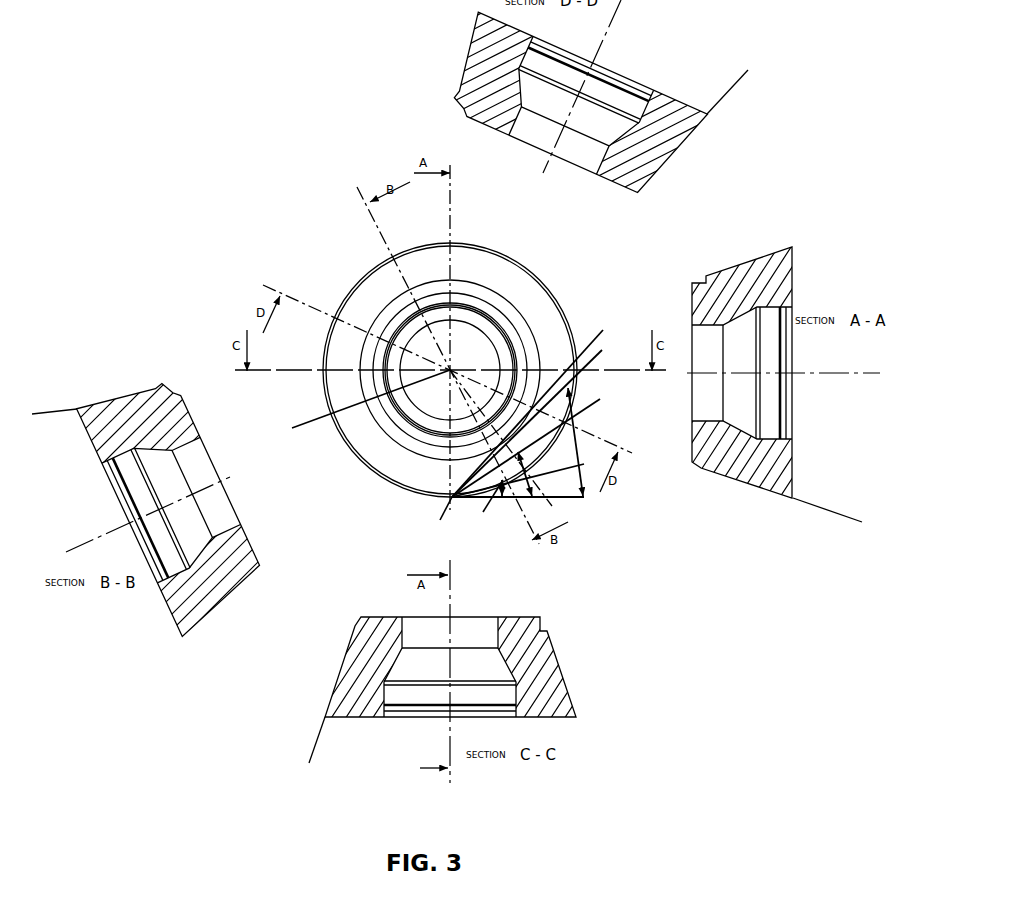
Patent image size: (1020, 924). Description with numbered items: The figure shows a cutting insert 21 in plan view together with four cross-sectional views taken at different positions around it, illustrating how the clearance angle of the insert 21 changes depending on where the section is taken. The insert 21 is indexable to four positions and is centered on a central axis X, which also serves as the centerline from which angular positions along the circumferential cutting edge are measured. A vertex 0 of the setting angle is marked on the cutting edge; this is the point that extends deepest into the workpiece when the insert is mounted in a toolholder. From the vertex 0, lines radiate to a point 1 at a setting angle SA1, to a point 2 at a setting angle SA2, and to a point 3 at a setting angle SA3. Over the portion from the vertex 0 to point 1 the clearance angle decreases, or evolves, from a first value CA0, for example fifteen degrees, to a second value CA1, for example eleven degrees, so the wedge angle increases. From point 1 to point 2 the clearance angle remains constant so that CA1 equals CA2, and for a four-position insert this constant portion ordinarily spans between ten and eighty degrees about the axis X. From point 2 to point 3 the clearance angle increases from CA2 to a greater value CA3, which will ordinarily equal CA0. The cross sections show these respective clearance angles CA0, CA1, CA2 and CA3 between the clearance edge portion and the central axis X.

The cutting insert 21 is at (301, 248).
The central axis X is at (359, 407).
The vertex of the setting angle 0 is at (503, 519).
The point 1 on the cutting edge 1 is at (518, 503).
The point 2 on the cutting edge 2 is at (536, 448).
The point 3 on the cutting edge 3 is at (529, 404).
The setting angle SA1 is at (503, 496).
The setting angle SA2 is at (584, 497).
The setting angle SA3 is at (569, 390).
The first clearance angle value CA0 is at (312, 755).
The second clearance angle value CA1 is at (78, 545).
The clearance angle value at point 2 CA2 is at (737, 76).
The clearance angle value at point 3 CA3 is at (851, 517).